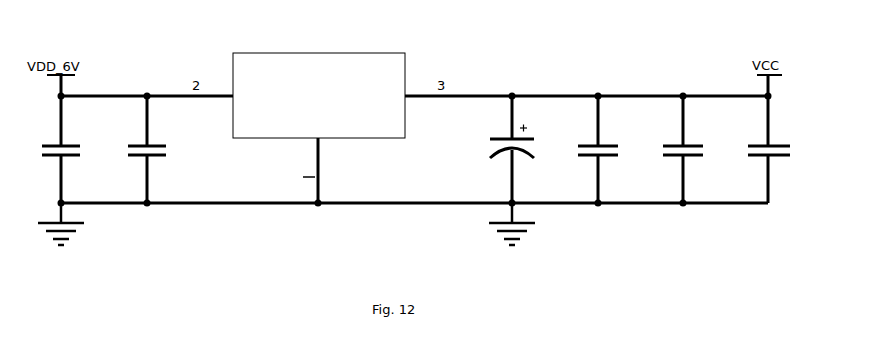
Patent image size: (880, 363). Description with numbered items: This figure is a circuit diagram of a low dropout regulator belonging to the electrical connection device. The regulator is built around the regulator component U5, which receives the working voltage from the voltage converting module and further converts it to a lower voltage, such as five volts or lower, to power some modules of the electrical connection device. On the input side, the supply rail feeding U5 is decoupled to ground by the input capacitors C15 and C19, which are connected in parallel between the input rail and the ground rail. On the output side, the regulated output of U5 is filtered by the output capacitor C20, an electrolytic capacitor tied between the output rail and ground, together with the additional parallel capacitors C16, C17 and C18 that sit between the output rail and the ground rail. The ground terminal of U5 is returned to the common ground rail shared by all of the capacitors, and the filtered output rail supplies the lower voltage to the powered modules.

The voltage regulator U5 is at (319, 86).
The capacitor 100nF C15 is at (82, 149).
The capacitor 100nF C19 is at (169, 149).
The electrolytic capacitor 470uF/16V C20 is at (482, 149).
The capacitor 100nF C16 is at (609, 149).
The capacitor 2.2nF C17 is at (702, 149).
The capacitor 100nF C18 is at (780, 149).